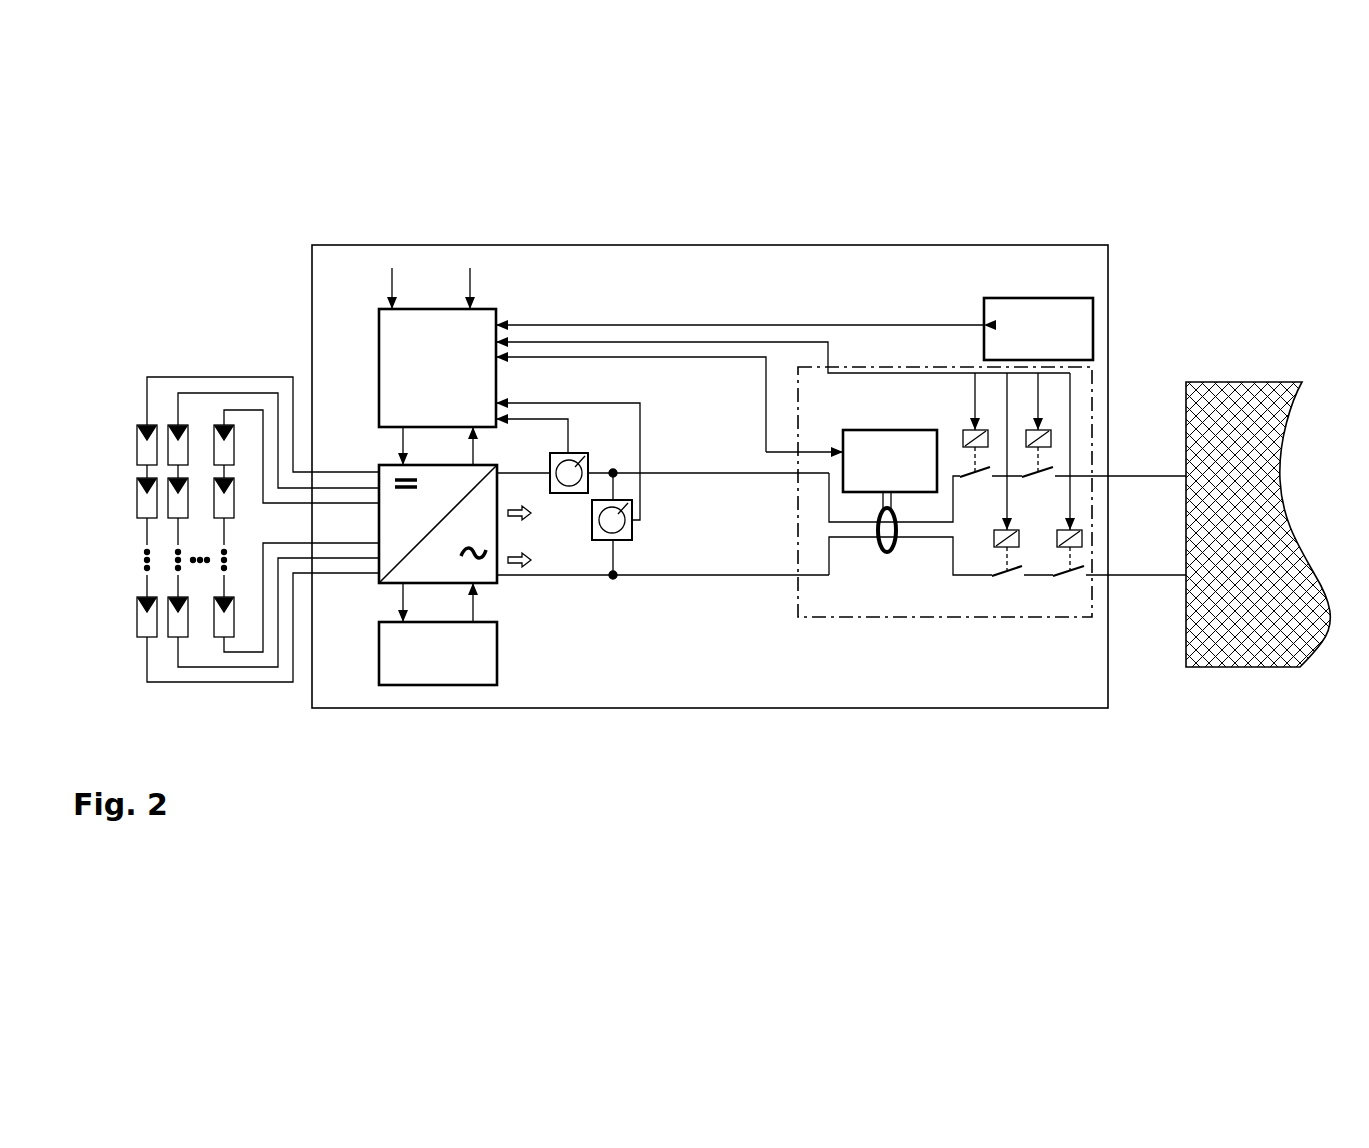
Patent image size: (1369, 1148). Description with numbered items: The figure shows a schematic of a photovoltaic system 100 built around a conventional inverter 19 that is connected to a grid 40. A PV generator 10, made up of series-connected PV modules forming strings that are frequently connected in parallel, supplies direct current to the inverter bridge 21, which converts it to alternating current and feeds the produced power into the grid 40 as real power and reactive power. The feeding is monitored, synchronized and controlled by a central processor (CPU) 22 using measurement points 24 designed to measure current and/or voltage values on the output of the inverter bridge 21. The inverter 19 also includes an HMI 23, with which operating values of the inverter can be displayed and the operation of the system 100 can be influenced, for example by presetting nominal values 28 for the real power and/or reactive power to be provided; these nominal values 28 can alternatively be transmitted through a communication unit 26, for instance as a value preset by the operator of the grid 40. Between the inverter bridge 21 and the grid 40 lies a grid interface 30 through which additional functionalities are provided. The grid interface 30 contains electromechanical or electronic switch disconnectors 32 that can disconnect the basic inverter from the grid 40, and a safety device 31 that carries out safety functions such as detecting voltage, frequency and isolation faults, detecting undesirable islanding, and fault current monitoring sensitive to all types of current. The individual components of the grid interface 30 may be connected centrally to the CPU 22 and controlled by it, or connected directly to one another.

The photovoltaic system 100 is at (204, 299).
The PV generator 10 is at (131, 466).
The inverter 19 is at (397, 243).
The inverter bridge 21 is at (378, 460).
The central processor (CPU) 22 is at (377, 395).
The HMI 23 is at (497, 638).
The measurement points 24 is at (590, 454).
The communication unit 26 is at (982, 313).
The nominal values 28 is at (507, 270).
The grid interface 30 is at (798, 510).
The safety device 31 is at (875, 545).
The switch disconnectors 32 is at (968, 428).
The grid 40 is at (1228, 382).